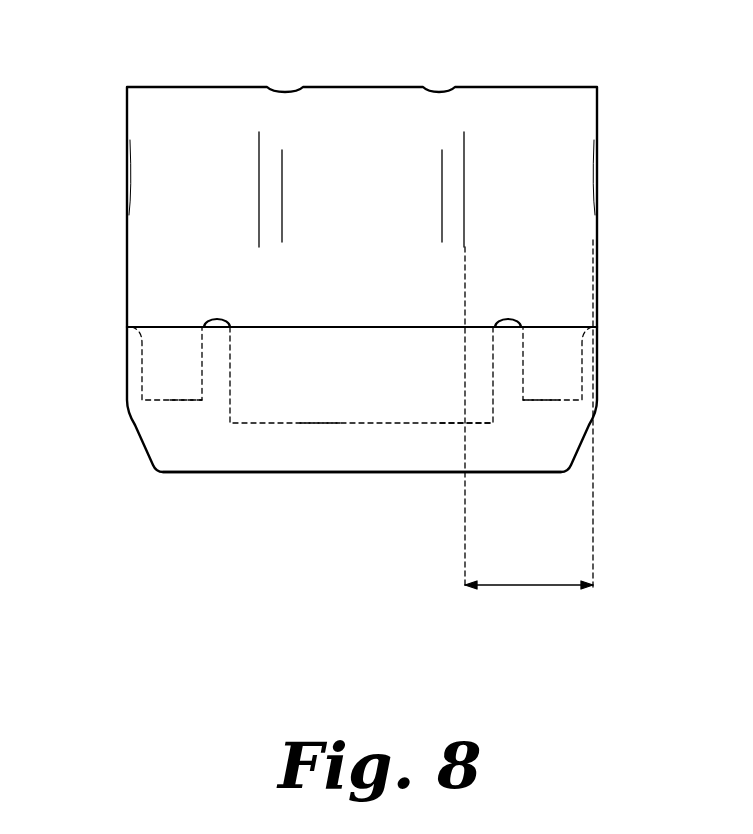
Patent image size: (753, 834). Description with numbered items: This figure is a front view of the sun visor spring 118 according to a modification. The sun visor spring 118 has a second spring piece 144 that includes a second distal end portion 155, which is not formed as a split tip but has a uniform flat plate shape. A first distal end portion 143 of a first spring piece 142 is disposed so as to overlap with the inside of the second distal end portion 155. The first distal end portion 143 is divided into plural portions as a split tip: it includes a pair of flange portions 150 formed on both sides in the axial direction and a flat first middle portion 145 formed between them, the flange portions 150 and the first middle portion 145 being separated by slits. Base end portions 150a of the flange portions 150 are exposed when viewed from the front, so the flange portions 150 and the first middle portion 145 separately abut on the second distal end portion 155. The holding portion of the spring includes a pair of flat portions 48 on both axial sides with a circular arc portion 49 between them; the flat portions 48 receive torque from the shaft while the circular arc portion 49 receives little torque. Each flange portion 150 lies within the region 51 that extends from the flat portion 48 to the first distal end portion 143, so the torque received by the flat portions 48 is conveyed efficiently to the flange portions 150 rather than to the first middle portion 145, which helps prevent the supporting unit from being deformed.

The sun visor spring 118 is at (381, 519).
The second distal end portion 155 is at (402, 327).
The circular arc portion 49 is at (365, 185).
The flat portions 48 is at (193, 188).
The base end portions 150a is at (217, 320).
The flange portions 150 is at (165, 400).
The first spring piece 142 is at (370, 338).
The first middle portion 145 is at (480, 423).
The first distal end portion 143 is at (188, 400).
The second spring piece 144 is at (278, 443).
The region 51 is at (523, 588).